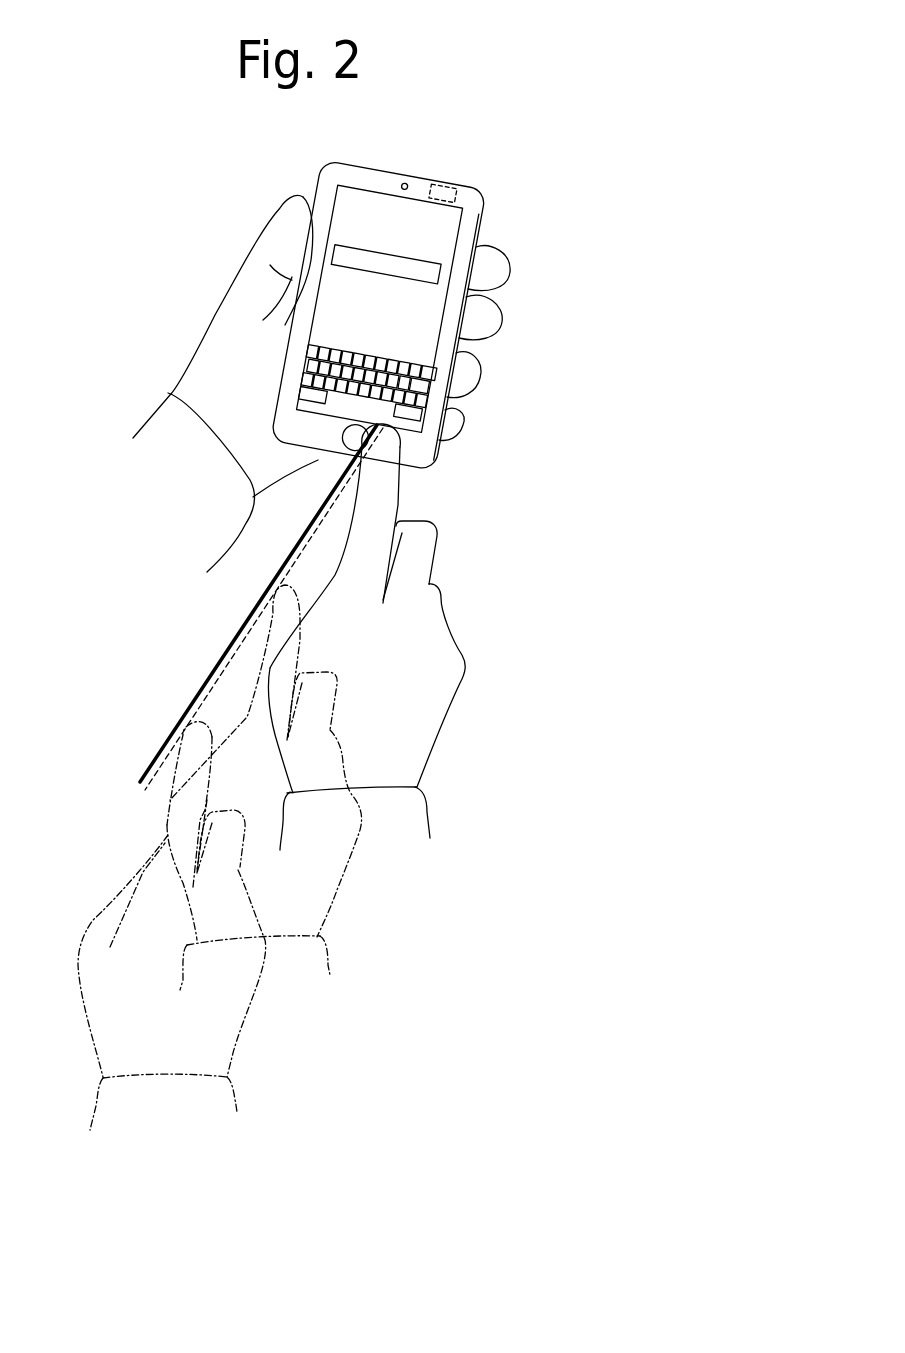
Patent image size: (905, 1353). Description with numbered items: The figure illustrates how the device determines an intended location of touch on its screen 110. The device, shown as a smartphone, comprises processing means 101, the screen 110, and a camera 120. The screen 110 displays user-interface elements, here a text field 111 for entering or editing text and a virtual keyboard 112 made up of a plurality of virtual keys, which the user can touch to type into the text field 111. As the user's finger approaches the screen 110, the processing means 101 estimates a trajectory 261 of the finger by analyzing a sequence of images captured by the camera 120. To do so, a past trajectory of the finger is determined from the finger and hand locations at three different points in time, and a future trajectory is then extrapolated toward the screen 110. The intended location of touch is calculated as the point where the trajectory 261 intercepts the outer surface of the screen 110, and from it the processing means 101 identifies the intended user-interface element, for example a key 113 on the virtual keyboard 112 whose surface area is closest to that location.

The processing means 101 is at (455, 185).
The screen 110 is at (447, 215).
The text field 111 is at (445, 270).
The virtual keyboard 112 is at (433, 378).
The key 113 is at (400, 400).
The camera 120 is at (405, 181).
The trajectory 261 is at (403, 433).